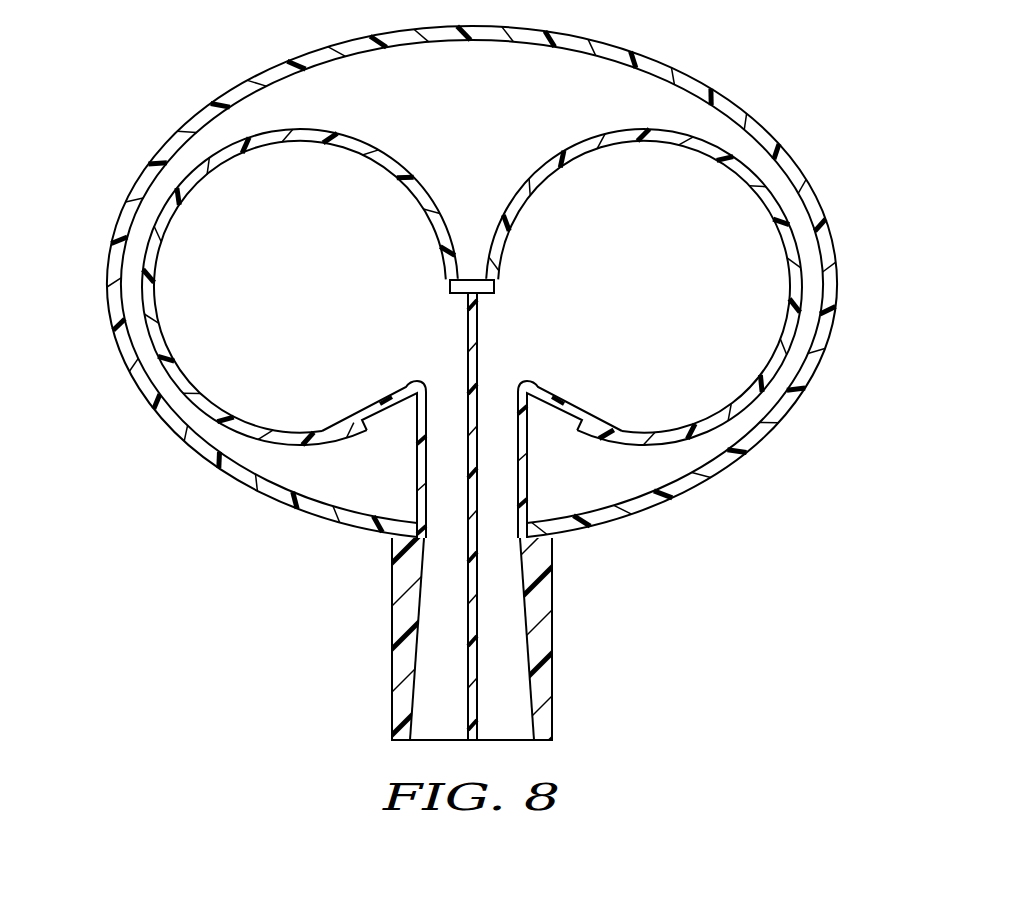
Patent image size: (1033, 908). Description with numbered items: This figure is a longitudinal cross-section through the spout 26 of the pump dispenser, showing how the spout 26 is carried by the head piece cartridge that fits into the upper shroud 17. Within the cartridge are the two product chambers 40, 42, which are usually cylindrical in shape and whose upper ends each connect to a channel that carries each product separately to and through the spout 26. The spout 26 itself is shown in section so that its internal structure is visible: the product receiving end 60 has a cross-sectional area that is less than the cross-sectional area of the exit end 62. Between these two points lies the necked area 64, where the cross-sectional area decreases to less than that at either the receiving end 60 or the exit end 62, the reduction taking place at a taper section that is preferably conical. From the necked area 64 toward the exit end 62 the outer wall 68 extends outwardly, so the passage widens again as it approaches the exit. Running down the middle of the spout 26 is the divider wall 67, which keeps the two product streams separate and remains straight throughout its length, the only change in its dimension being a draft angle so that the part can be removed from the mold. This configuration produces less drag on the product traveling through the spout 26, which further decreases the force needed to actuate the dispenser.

The upper shroud 17 is at (733, 107).
The product chamber 42 is at (180, 295).
The product chamber 40 is at (738, 358).
The product receiving end 60 is at (448, 413).
The spout 26 is at (552, 587).
The necked area 64 is at (408, 628).
The outer wall 68 is at (392, 663).
The divider wall 67 is at (478, 677).
The exit end 62 is at (448, 702).